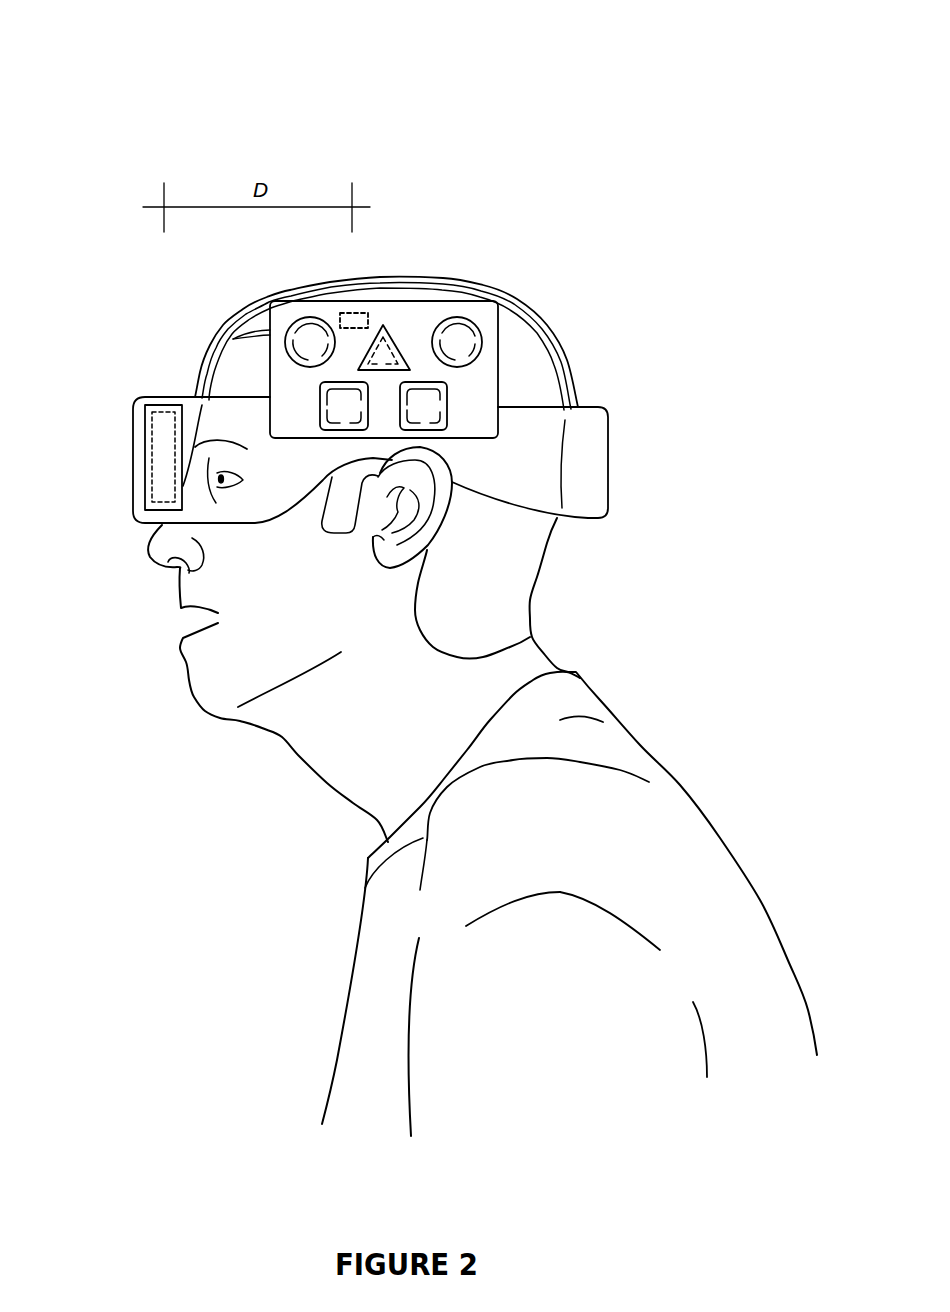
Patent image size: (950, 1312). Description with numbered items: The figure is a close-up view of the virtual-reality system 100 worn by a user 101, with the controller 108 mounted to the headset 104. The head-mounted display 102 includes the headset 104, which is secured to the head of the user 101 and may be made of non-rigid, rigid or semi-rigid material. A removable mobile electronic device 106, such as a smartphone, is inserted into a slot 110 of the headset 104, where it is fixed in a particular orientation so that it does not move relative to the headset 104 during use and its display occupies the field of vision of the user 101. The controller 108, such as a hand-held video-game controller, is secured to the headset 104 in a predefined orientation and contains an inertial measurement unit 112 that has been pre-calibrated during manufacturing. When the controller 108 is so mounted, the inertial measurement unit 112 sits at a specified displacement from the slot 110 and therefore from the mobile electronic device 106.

The virtual-reality system 100 is at (100, 44).
The user 101 is at (642, 740).
The head-mounted display 102 is at (135, 353).
The headset 104 is at (608, 430).
The mobile electronic device 106 is at (147, 475).
The controller 108 is at (500, 342).
The slot 110 is at (160, 405).
The inertial measurement unit 112 is at (367, 318).